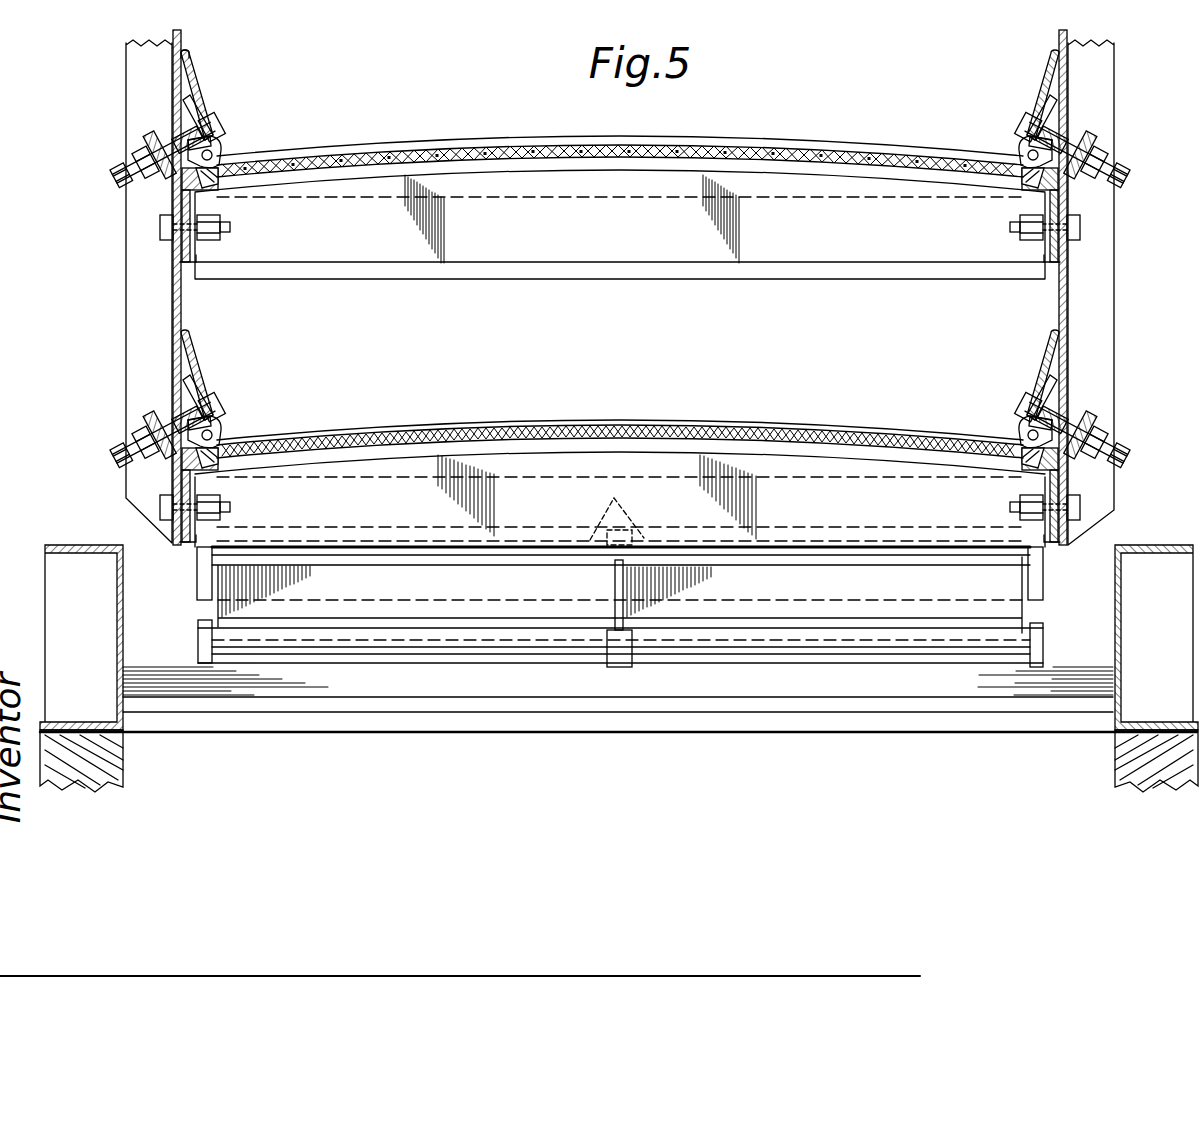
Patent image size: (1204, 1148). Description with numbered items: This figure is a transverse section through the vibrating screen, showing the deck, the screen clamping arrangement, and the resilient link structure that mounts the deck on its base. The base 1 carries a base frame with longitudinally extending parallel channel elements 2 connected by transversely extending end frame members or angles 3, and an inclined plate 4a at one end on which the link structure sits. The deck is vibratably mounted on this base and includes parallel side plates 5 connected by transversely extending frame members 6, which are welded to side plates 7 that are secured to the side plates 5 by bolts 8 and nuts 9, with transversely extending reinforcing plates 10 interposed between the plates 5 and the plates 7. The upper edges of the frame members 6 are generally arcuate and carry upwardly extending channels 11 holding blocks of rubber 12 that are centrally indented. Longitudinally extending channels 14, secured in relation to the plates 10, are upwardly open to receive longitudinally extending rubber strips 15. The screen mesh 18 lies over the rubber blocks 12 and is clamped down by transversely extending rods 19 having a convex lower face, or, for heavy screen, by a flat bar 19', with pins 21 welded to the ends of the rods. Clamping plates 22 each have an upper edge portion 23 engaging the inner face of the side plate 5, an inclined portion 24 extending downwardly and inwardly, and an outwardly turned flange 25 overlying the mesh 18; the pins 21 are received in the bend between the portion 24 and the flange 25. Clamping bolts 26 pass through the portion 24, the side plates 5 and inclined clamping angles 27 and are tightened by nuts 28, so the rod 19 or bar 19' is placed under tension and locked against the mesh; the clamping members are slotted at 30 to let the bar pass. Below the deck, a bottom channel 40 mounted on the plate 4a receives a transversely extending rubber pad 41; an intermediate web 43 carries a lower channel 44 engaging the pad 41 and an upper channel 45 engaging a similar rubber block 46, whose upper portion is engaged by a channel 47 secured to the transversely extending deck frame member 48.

The base 1 is at (100, 765).
The channel element 2 is at (118, 555).
The end frame member 3 is at (318, 722).
The inclined plate 4a is at (243, 670).
The side plate 5 is at (176, 308).
The transversely extending frame member 6 is at (436, 255).
The side plate 7 is at (194, 255).
The bolt 8 is at (232, 227).
The nut 9 is at (215, 240).
The reinforcing plate 10 is at (184, 262).
The upwardly extending channel 11 is at (516, 165).
The rubber block 12 is at (316, 165).
The longitudinally extending channel 14 is at (200, 190).
The rubber strip 15 is at (216, 183).
The screen mesh 18 is at (458, 152).
The transversely extending rod 19 is at (618, 414).
The flat bar 19' is at (605, 131).
The pin 21 is at (222, 145).
The clamping plate 22 is at (192, 72).
The upper edge portion 23 is at (190, 54).
The inclined portion 24 is at (198, 108).
The outwardly turned flange 25 is at (196, 135).
The clamping bolt 26 is at (222, 128).
The inclined clamping angle 27 is at (150, 140).
The nut 28 is at (125, 168).
The slot 30 is at (213, 154).
The bottom channel 40 is at (395, 658).
The rubber pad 41 is at (453, 650).
The intermediate web 43 is at (1040, 640).
The lower channel 44 is at (538, 640).
The upper channel 45 is at (563, 562).
The rubber block 46 is at (510, 555).
The channel 47 is at (617, 577).
The deck frame member 48 is at (200, 596).